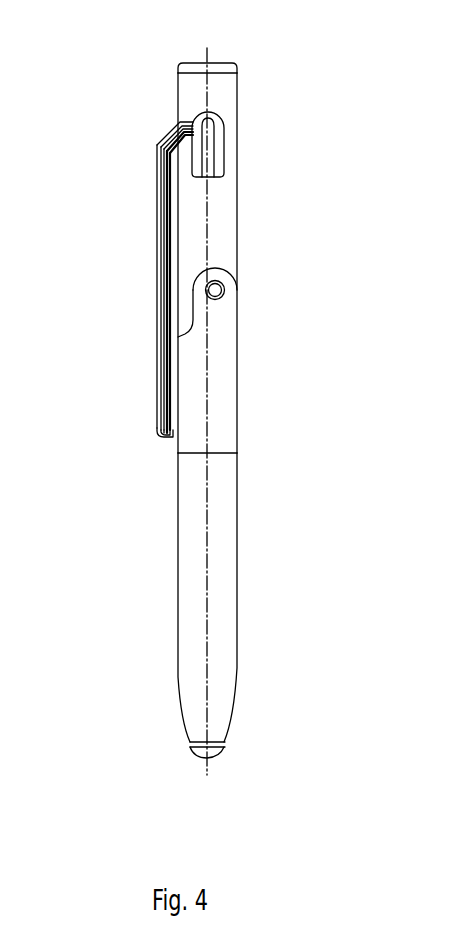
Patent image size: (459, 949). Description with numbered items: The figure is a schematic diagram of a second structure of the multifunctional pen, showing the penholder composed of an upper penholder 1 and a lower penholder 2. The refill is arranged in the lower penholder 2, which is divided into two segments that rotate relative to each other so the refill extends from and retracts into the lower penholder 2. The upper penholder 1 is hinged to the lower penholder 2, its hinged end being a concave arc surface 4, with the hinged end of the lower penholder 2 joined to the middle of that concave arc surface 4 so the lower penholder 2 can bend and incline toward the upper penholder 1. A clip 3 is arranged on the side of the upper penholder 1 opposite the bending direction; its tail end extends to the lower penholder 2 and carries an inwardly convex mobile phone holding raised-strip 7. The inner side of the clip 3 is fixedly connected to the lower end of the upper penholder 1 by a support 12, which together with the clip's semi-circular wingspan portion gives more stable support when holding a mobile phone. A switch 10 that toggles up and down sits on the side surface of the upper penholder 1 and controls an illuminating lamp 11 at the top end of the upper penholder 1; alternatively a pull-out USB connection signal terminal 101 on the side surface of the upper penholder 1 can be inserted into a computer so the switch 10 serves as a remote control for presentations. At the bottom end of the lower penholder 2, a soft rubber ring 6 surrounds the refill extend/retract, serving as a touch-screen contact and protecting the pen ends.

The upper penholder 1 is at (237, 217).
The lower penholder 2 is at (237, 408).
The clip 3 is at (157, 268).
The concave arc surface 4 is at (215, 266).
The soft rubber ring 6 is at (220, 750).
The mobile phone holding raised-strip 7 is at (162, 432).
The switch 10 is at (229, 152).
The illuminating lamp 11 is at (238, 70).
The support 12 is at (180, 323).
The USB connection signal terminal 101 is at (197, 140).